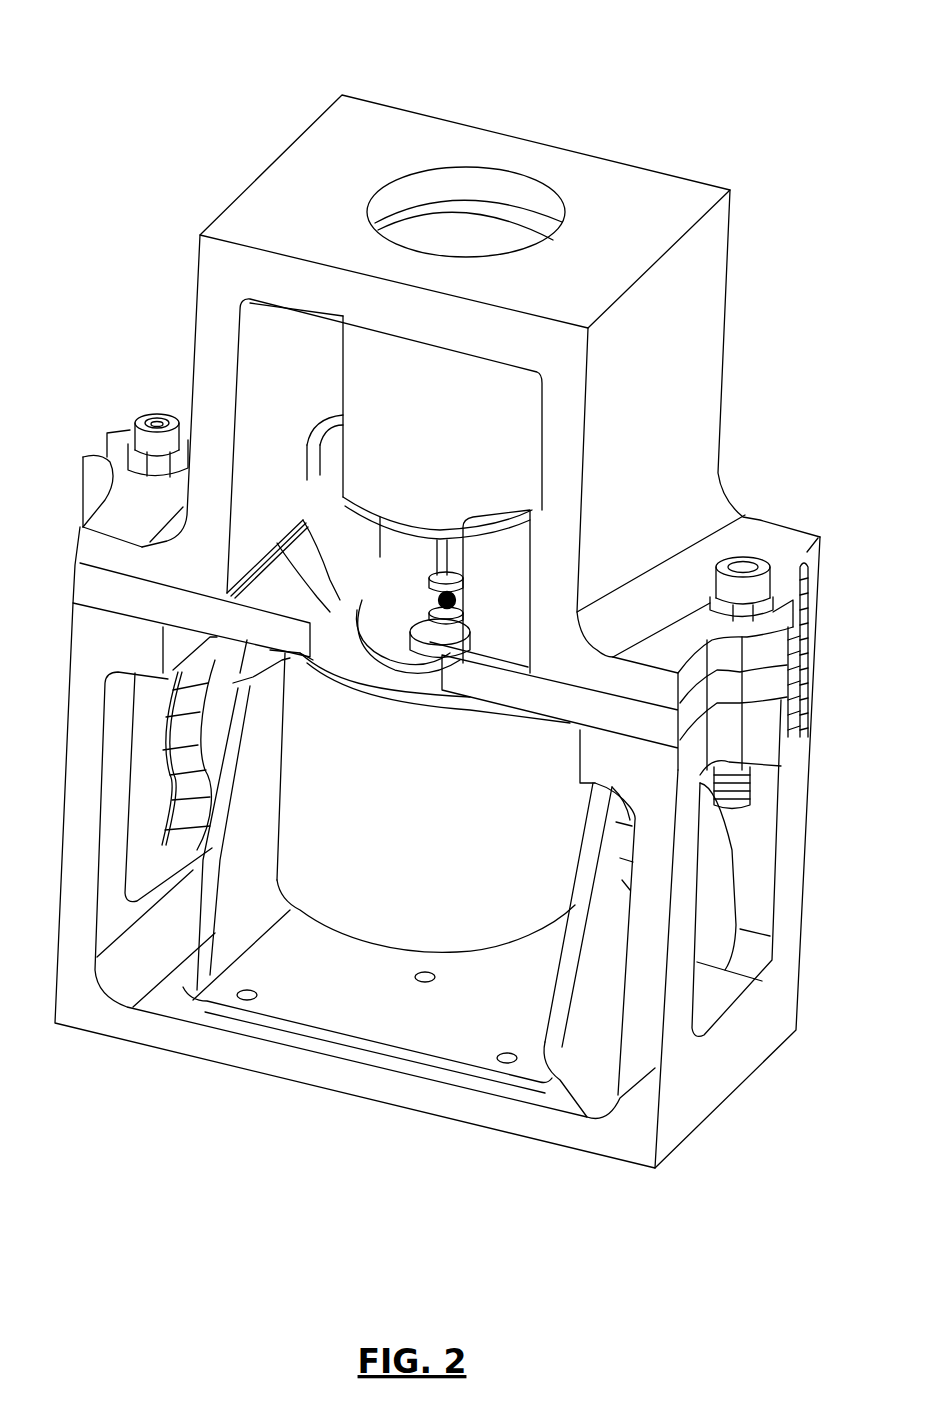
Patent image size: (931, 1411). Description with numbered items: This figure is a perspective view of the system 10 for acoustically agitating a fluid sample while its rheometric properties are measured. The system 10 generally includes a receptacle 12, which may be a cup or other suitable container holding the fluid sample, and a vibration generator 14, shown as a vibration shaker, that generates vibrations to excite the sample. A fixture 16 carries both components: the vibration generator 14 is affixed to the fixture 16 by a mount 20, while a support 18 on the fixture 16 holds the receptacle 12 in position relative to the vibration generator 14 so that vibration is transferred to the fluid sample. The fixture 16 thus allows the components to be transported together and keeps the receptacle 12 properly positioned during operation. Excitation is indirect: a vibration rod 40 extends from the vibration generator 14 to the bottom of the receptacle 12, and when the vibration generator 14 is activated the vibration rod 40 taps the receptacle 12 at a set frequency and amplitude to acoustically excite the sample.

The system 10 is at (158, 55).
The receptacle 12 is at (487, 402).
The vibration generator 14 is at (483, 947).
The fixture 16 is at (382, 106).
The support 18 is at (352, 512).
The mount 20 is at (555, 1047).
The vibration rod 40 is at (450, 557).